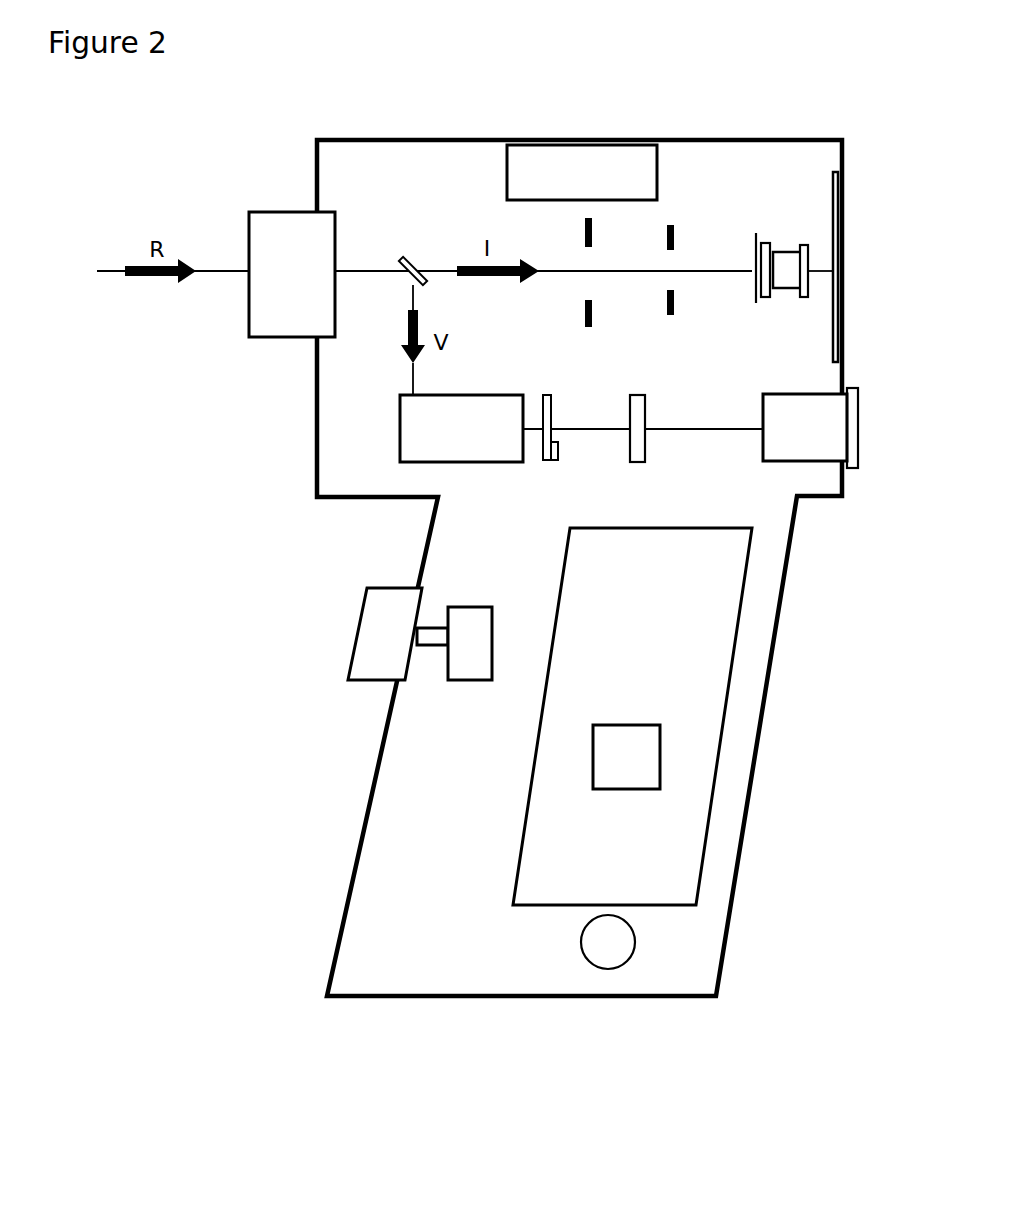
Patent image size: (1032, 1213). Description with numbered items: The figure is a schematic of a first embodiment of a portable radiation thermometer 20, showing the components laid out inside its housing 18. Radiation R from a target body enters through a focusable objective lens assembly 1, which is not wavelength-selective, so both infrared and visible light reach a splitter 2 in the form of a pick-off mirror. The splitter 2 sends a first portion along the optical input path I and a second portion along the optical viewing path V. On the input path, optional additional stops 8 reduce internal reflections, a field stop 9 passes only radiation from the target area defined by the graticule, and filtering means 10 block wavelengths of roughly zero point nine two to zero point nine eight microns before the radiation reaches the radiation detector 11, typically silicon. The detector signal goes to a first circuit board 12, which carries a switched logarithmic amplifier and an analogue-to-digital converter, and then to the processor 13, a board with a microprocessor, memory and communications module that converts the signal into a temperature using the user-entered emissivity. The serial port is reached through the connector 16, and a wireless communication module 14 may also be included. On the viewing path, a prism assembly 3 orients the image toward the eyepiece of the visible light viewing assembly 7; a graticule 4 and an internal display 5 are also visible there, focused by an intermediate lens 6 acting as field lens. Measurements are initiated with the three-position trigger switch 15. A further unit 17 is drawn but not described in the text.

The objective lens assembly 1 is at (284, 304).
The splitter 2 is at (414, 258).
The prism assembly 3 is at (437, 441).
The graticule 4 is at (542, 452).
The internal display 5 is at (557, 456).
The intermediate lens 6 is at (640, 448).
The visible light viewing assembly 7 is at (798, 436).
The additional stops 8 is at (629, 284).
The field stop 9 is at (753, 291).
The filtering means 10 is at (768, 300).
The radiation detector 11 is at (796, 250).
The first circuit board 12 is at (845, 212).
The processor 13 is at (651, 588).
The wireless communication module 14 is at (613, 771).
The switch 15 is at (370, 653).
The connector 16 is at (618, 942).
The electronics unit 17 is at (570, 187).
The housing 18 is at (338, 881).
The radiation thermometer 20 is at (233, 431).